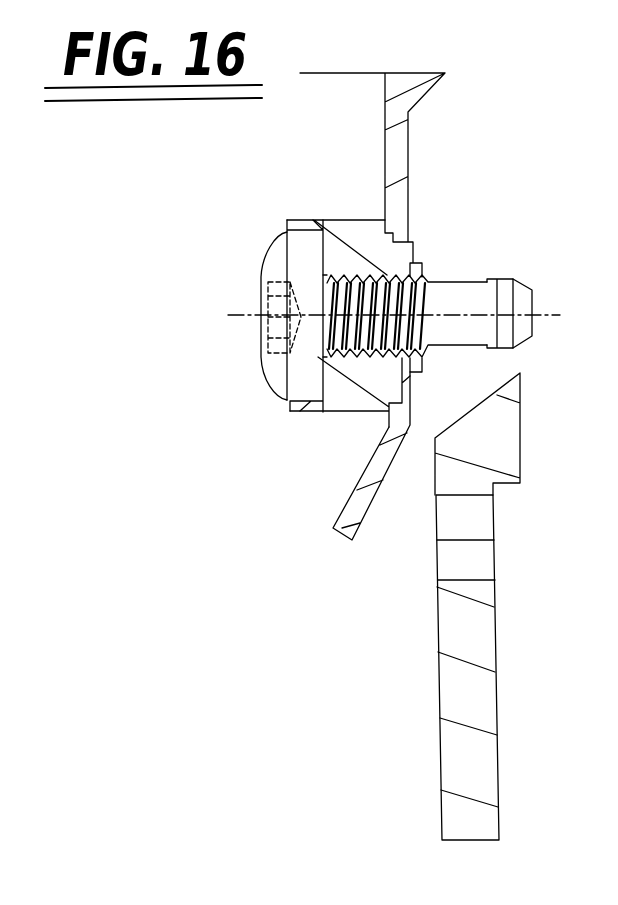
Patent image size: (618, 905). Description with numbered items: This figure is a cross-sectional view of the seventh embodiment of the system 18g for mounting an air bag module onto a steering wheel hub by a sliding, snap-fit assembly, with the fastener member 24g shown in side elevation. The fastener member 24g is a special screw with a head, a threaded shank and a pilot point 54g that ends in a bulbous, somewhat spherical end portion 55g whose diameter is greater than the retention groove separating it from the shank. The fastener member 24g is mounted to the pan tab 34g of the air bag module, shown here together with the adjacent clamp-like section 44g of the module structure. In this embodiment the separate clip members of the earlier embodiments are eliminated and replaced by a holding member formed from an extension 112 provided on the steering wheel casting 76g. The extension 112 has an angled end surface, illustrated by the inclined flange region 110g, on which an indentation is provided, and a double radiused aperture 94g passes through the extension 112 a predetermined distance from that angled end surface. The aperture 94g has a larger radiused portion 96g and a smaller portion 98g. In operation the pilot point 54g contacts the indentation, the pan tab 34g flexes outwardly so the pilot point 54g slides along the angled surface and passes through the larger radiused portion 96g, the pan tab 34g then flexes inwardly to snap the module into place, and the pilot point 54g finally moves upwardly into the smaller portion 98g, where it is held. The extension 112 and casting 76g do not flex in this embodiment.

The system 18g is at (250, 480).
The fastener member 24g is at (264, 373).
The pan tab 34g is at (345, 510).
The clamp 44g is at (344, 231).
The pilot point 54g is at (523, 280).
The end portion 55g is at (523, 319).
The steering wheel casting 76g is at (490, 786).
The double radiused aperture 94g is at (436, 524).
The larger radiused portion 96g is at (470, 580).
The smaller portion 98g is at (478, 498).
The inclined flange of bracket 110g is at (472, 410).
The extension 112 is at (487, 651).